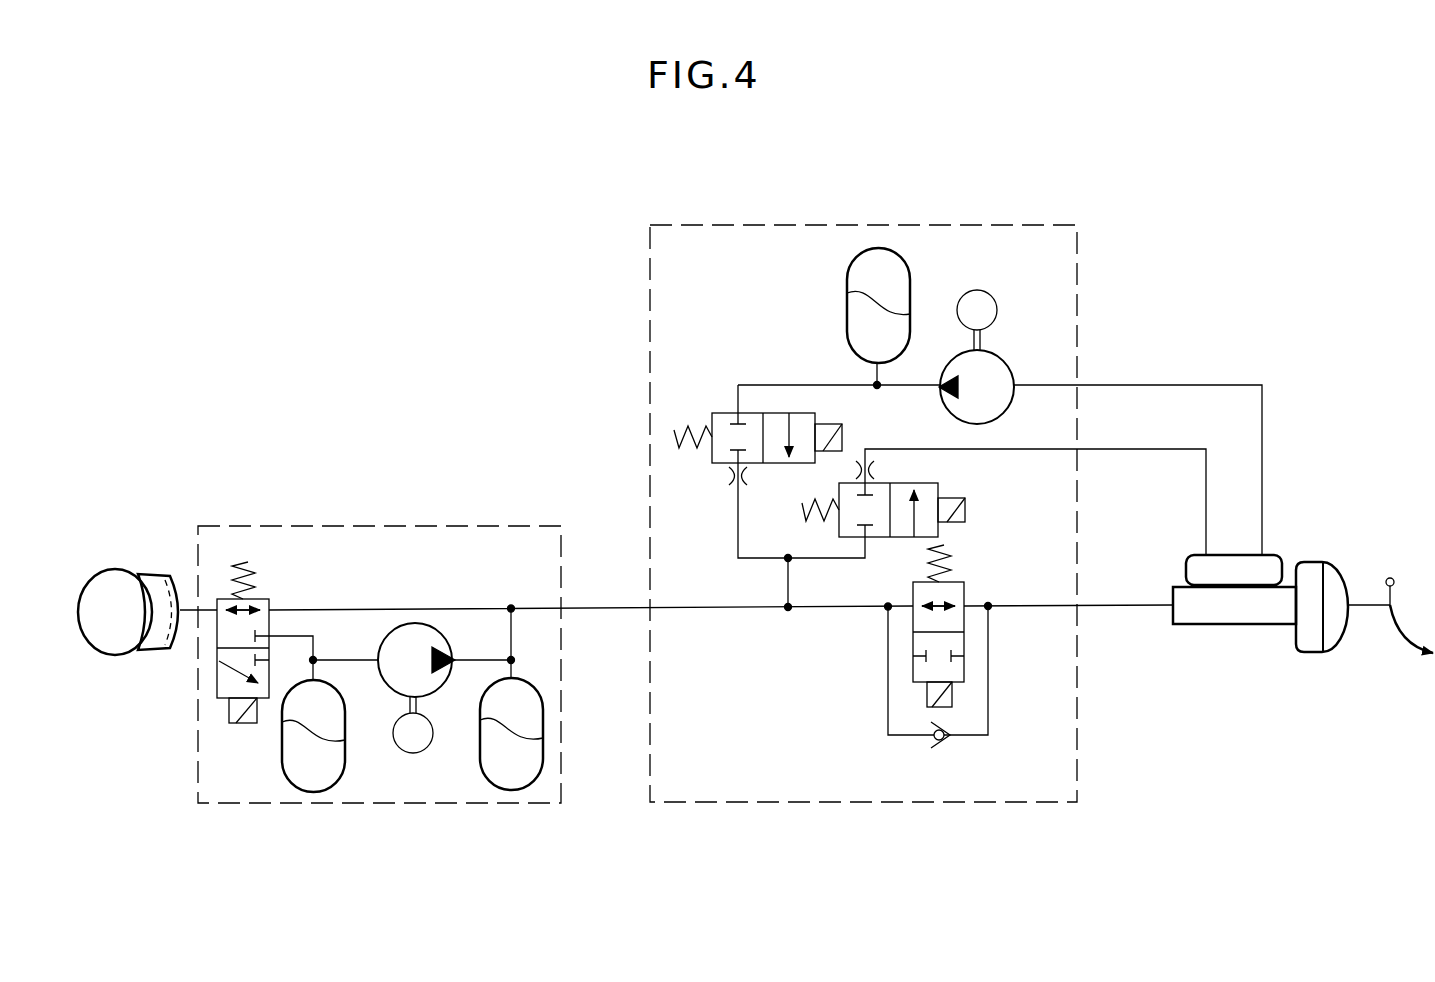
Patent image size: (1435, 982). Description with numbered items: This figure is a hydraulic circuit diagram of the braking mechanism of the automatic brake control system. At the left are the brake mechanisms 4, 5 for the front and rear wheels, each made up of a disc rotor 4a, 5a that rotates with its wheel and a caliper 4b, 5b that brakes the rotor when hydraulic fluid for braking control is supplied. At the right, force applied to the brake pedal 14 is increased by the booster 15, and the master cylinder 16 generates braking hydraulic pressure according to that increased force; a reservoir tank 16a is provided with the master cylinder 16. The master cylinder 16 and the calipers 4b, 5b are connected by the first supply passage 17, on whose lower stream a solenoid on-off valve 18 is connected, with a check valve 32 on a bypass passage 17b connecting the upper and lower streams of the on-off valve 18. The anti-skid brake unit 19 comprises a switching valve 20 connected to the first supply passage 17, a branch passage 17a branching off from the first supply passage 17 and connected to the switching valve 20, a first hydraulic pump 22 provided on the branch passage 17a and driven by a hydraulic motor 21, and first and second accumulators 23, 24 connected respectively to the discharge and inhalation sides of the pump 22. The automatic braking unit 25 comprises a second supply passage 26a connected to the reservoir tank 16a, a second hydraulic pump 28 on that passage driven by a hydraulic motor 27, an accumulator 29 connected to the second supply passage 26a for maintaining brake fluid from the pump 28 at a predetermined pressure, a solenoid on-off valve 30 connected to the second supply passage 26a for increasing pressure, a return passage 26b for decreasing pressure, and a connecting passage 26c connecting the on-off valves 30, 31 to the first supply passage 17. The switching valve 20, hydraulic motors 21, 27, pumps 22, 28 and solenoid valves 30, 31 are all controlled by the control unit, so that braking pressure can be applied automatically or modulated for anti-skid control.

The brake mechanism 4 is at (178, 594).
The brake mechanism 5 is at (178, 594).
The disc rotor 4a is at (135, 563).
The disc rotor 5a is at (118, 570).
The caliper 4b is at (128, 645).
The caliper 5b is at (148, 622).
The brake pedal 14 is at (1434, 662).
The booster 15 is at (1338, 565).
The master cylinder 16 is at (1223, 617).
The reservoir tank 16a is at (1270, 565).
The first supply passage 17 is at (1127, 605).
The branch passage 17a is at (512, 632).
The bypass passage 17b is at (990, 678).
The solenoid on-off valve 18 is at (972, 590).
The anti-skid brake unit 19 is at (445, 521).
The switching valve 20 is at (277, 597).
The hydraulic motor 21 is at (425, 750).
The first hydraulic pump 22 is at (420, 623).
The first accumulator 23 is at (282, 760).
The second accumulator 24 is at (535, 755).
The automatic braking unit 25 is at (1000, 220).
The second supply passage 26a is at (1188, 383).
The return passage 26b is at (1158, 446).
The connecting passage 26c is at (790, 580).
The hydraulic motor 27 is at (997, 297).
The second hydraulic pump 28 is at (1007, 355).
The accumulator 29 is at (847, 282).
The solenoid on-off valve 30 is at (732, 405).
The solenoid on-off valve 31 is at (922, 480).
The check valve 32 is at (950, 745).